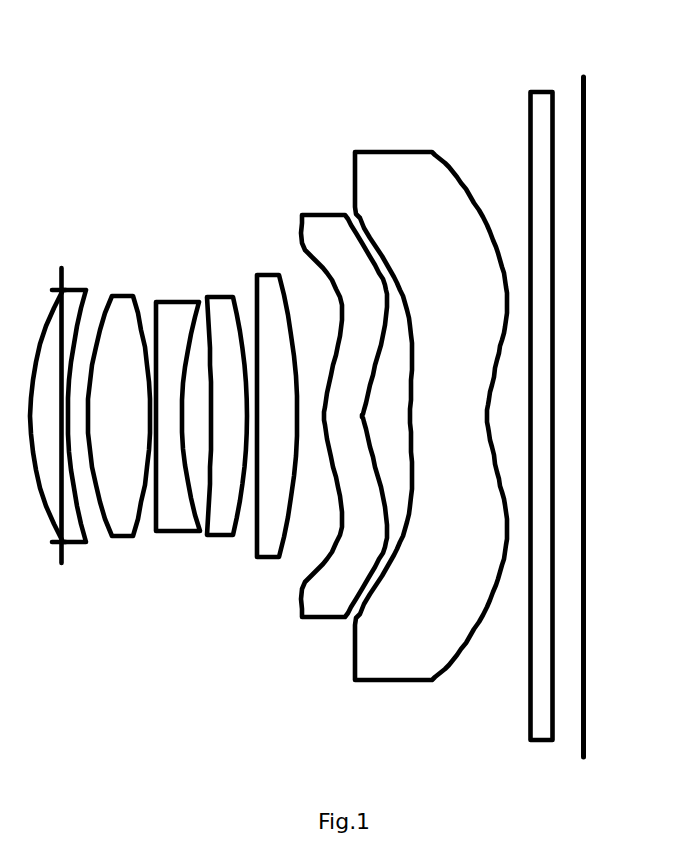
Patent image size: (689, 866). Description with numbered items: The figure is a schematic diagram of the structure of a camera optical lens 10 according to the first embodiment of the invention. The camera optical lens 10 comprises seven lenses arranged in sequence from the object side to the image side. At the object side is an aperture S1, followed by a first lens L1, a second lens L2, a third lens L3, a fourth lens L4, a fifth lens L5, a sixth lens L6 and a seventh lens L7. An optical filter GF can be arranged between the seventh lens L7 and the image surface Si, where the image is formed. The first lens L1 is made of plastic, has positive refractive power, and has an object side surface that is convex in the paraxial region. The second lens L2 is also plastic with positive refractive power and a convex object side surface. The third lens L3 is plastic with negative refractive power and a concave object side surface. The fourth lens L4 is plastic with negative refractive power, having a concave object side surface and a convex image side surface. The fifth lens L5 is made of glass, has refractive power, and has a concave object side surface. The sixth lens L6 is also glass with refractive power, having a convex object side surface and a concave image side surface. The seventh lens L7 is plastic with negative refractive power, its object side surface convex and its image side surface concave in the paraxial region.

The camera optical lens 10 is at (333, 48).
The aperture S1 is at (49, 414).
The first lens L1 is at (61, 403).
The second lens L2 is at (119, 401).
The third lens L3 is at (178, 403).
The fourth lens L4 is at (227, 401).
The fifth lens L5 is at (275, 402).
The sixth lens L6 is at (344, 402).
The seventh lens L7 is at (431, 401).
The optical filter GF is at (543, 402).
The image surface Si is at (583, 403).